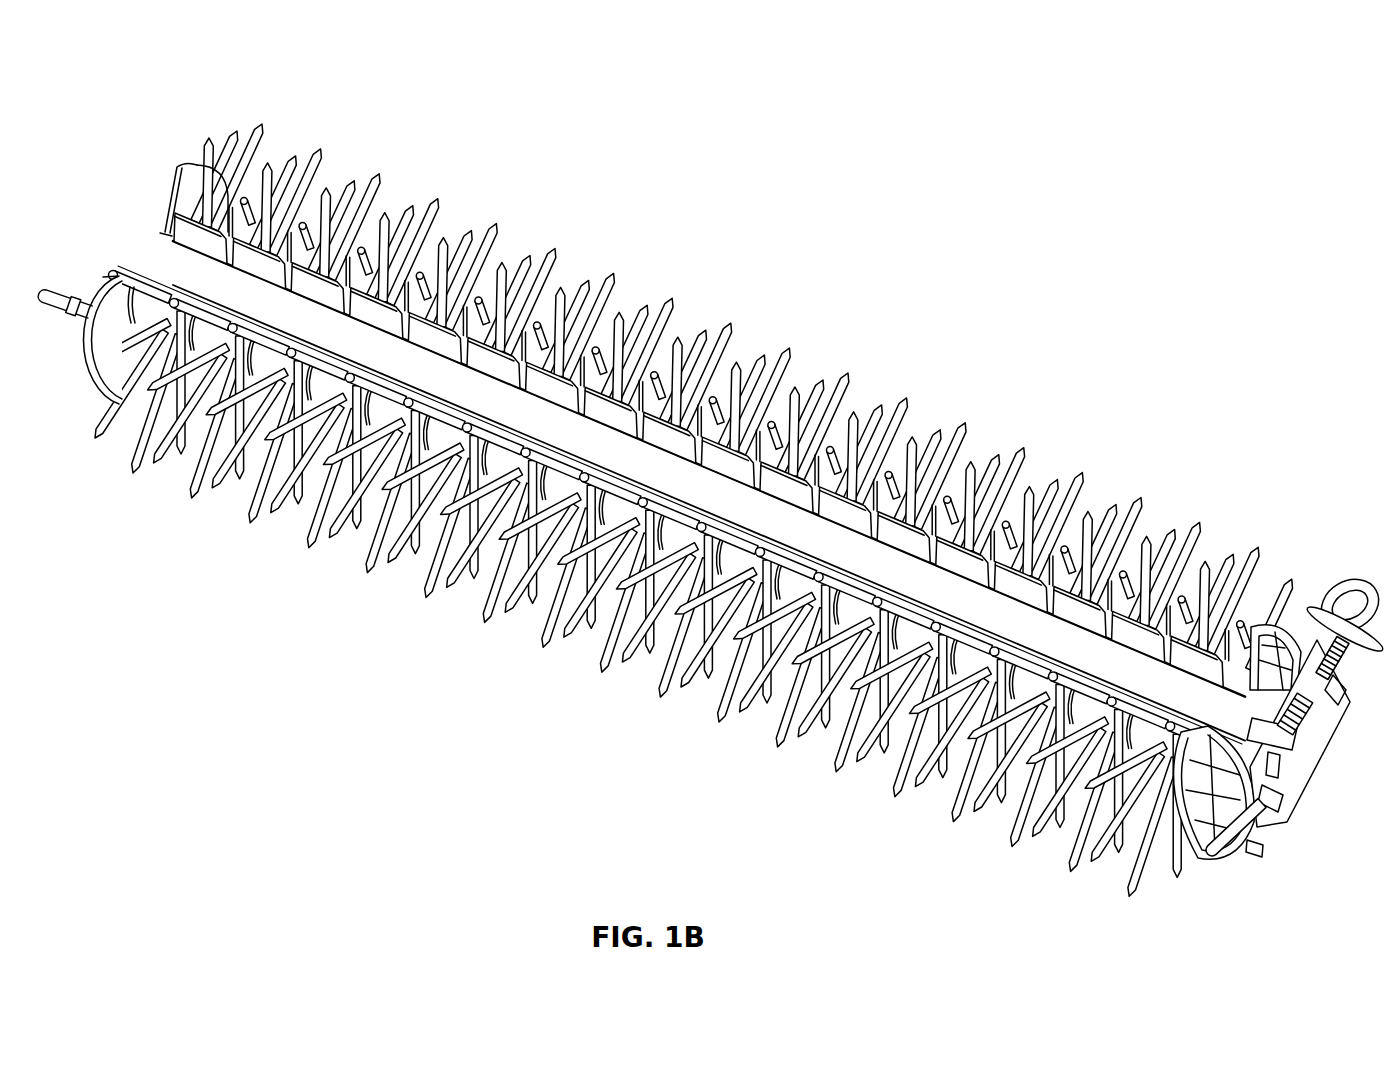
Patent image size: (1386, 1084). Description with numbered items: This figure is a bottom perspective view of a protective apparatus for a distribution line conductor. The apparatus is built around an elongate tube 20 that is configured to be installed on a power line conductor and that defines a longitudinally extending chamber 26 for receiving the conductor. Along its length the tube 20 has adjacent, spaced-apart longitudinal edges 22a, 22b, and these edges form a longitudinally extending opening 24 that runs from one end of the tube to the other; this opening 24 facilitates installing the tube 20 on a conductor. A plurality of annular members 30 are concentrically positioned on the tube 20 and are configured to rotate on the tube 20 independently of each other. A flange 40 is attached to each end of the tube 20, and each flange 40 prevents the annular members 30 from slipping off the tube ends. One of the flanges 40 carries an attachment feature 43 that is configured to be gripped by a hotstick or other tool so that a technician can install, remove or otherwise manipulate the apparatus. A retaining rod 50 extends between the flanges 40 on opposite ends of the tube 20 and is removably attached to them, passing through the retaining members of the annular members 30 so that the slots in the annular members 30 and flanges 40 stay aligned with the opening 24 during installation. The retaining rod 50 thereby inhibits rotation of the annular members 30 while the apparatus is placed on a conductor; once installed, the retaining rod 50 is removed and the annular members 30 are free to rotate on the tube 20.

The tube 20 is at (200, 268).
The longitudinal edge 22a is at (1217, 585).
The longitudinal edge 22b is at (1247, 745).
The longitudinally extending opening 24 is at (687, 302).
The longitudinally extending chamber 26 is at (492, 400).
The annular members 30 is at (288, 130).
The flange 40 is at (84, 336).
The attachment feature 43 is at (1358, 580).
The retaining rod 50 is at (67, 288).